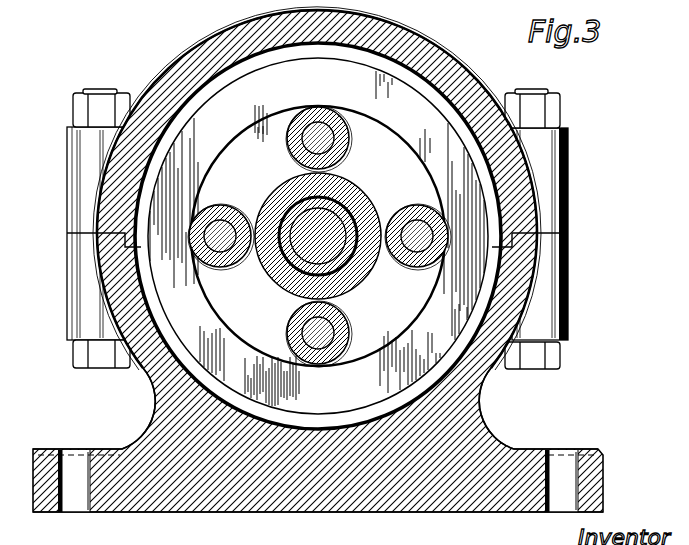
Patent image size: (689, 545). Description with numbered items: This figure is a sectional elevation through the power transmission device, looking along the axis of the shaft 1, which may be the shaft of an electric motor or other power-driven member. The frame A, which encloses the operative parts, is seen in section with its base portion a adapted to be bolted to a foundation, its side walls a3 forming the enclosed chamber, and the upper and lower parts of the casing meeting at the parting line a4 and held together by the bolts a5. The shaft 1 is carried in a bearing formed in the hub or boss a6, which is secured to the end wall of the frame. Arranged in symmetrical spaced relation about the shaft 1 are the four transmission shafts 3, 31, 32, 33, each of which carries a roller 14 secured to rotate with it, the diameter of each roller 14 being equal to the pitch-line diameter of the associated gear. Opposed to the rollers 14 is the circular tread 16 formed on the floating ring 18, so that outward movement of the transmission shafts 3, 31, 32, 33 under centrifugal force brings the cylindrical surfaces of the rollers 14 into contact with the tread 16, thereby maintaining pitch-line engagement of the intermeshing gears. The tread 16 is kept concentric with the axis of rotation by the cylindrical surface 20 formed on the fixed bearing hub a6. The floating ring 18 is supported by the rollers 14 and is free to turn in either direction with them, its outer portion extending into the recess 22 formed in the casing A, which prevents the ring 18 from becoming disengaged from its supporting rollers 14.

The shaft 1 is at (298, 258).
The transmission shaft 3 is at (351, 139).
The transmission shaft 31 is at (415, 252).
The transmission shaft 32 is at (332, 332).
The transmission shaft 33 is at (227, 252).
The roller 14 is at (289, 139).
The circular tread 16 is at (394, 140).
The floating ring 18 is at (418, 146).
The cylindrical surface 20 is at (277, 188).
The recess 22 is at (403, 72).
The base portion a is at (368, 512).
The frame A is at (489, 405).
The side wall a3 is at (463, 78).
The parting line a4 is at (568, 232).
The bolt a5 is at (545, 97).
The bearing hub a6 is at (351, 292).